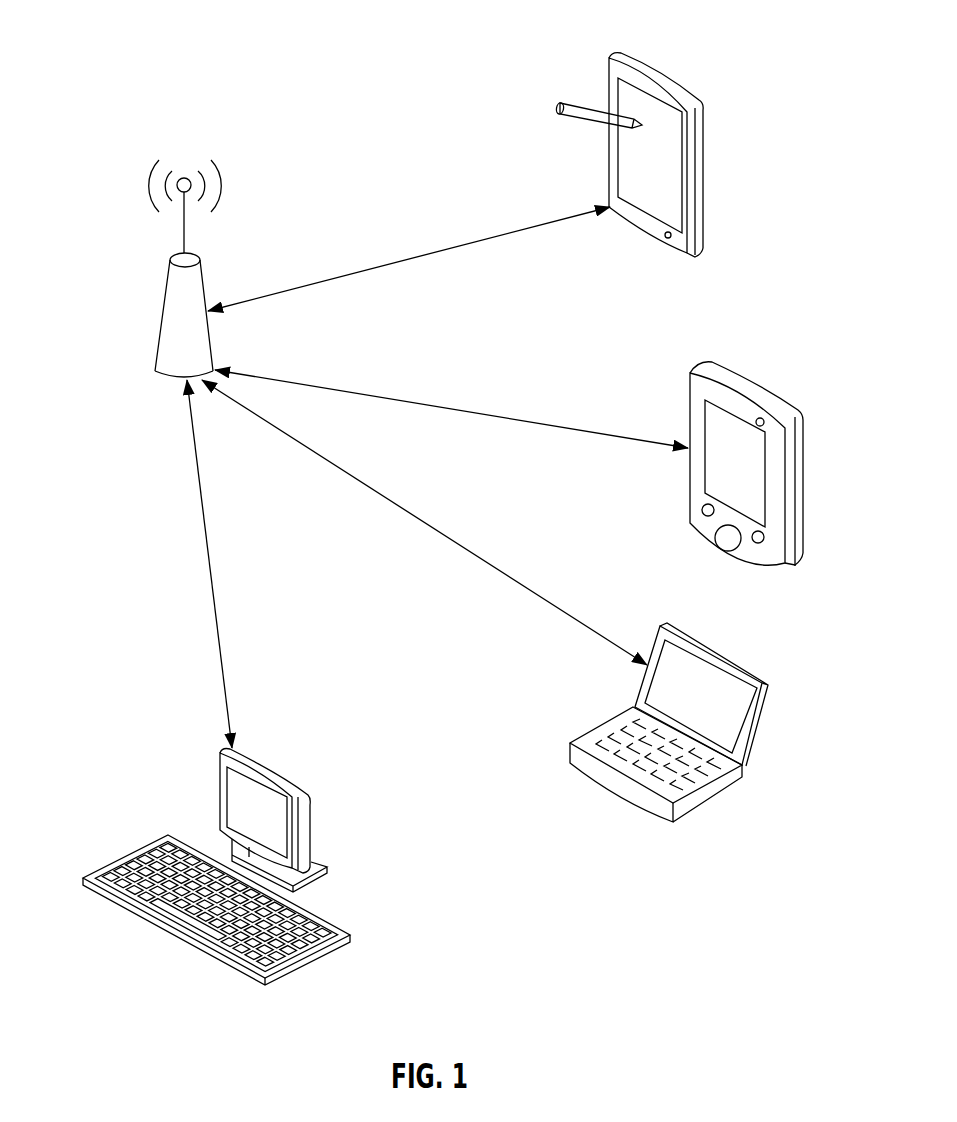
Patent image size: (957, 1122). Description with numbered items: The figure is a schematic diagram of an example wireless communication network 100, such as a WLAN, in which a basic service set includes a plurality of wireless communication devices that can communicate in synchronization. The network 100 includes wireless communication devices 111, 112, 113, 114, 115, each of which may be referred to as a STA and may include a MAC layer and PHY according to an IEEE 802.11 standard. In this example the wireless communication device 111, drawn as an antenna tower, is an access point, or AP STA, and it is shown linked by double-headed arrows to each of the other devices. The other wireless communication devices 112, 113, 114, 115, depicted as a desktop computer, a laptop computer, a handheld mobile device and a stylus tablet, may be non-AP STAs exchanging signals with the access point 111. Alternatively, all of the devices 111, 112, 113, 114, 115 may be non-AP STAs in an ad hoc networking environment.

The wireless communication network 100 is at (116, 46).
The wireless communication device 111 is at (160, 317).
The wireless communication device 112 is at (220, 792).
The wireless communication device 113 is at (760, 735).
The wireless communication device 114 is at (803, 482).
The wireless communication device 115 is at (707, 175).